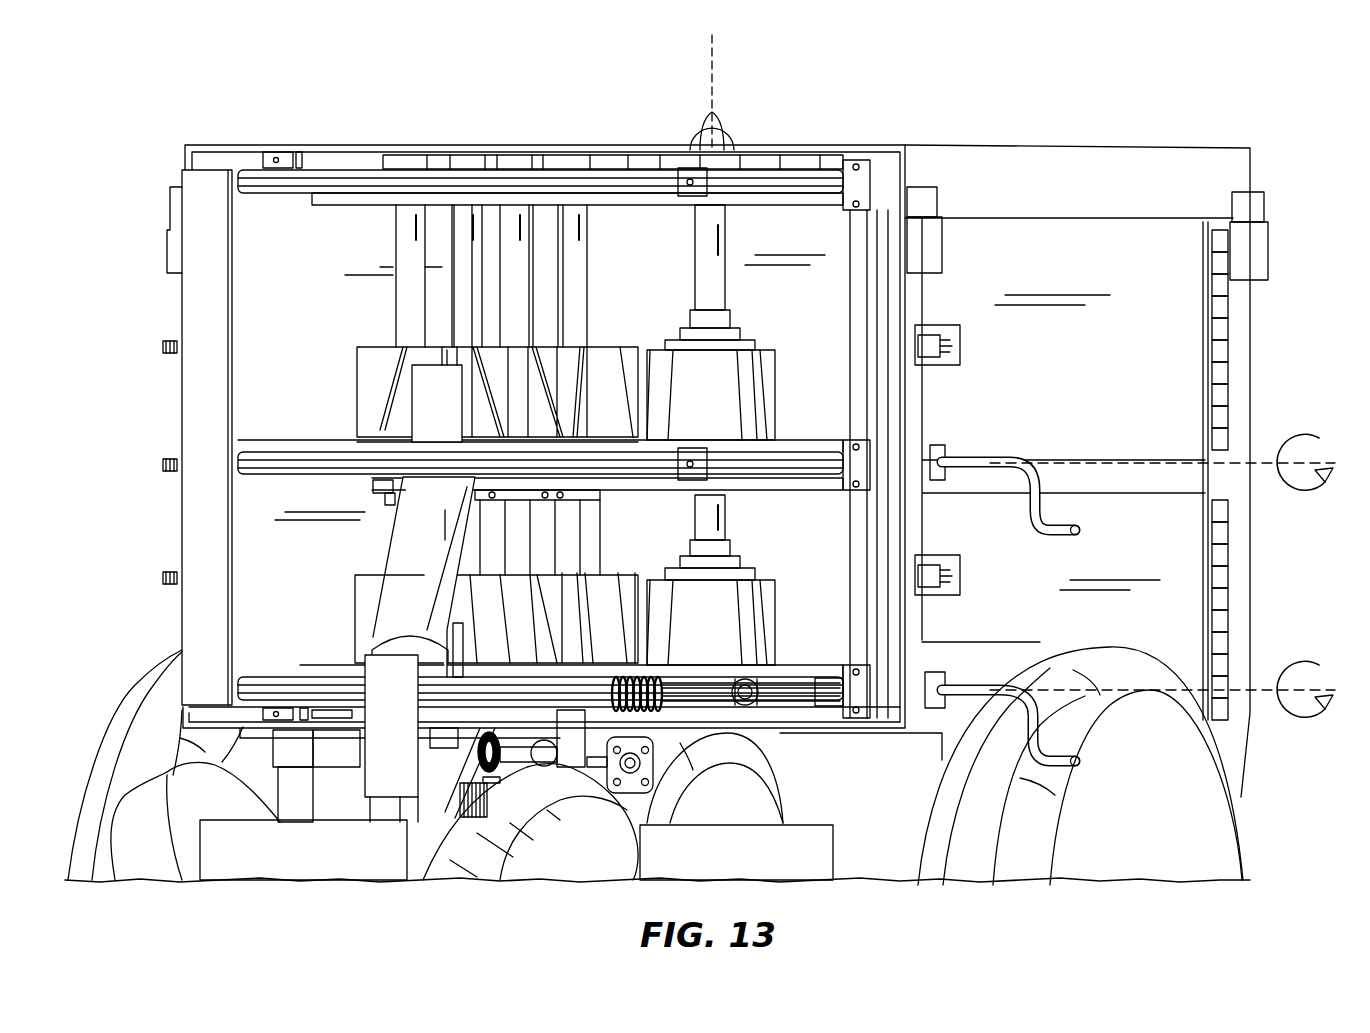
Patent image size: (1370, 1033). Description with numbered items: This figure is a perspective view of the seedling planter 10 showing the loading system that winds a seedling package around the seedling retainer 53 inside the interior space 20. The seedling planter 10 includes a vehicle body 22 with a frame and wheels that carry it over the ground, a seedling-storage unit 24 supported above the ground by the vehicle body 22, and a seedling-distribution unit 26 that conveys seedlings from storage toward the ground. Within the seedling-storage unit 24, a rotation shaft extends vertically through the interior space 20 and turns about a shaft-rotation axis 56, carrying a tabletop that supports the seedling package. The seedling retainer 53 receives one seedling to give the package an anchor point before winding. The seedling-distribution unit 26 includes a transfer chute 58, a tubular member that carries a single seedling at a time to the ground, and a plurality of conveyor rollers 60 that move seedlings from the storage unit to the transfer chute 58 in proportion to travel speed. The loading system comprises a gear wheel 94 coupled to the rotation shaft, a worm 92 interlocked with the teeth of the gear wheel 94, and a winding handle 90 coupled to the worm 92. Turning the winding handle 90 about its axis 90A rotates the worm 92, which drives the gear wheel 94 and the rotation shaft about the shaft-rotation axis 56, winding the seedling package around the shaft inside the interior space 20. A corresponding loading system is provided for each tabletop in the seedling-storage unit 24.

The seedling planter 10 is at (1122, 110).
The interior space 20 is at (345, 245).
The vehicle body 22 is at (1255, 822).
The seedling-storage unit 24 is at (853, 135).
The seedling-distribution unit 26 is at (487, 135).
The seedling retainer 53 is at (785, 370).
The shaft-rotation axis 56 is at (710, 100).
The transfer chute 58 is at (378, 555).
The conveyor rollers 60 is at (340, 360).
The winding handle 90 is at (985, 460).
The handle rotation axis 90A is at (1262, 470).
The worm 92 is at (650, 712).
The gear wheel 94 is at (720, 712).